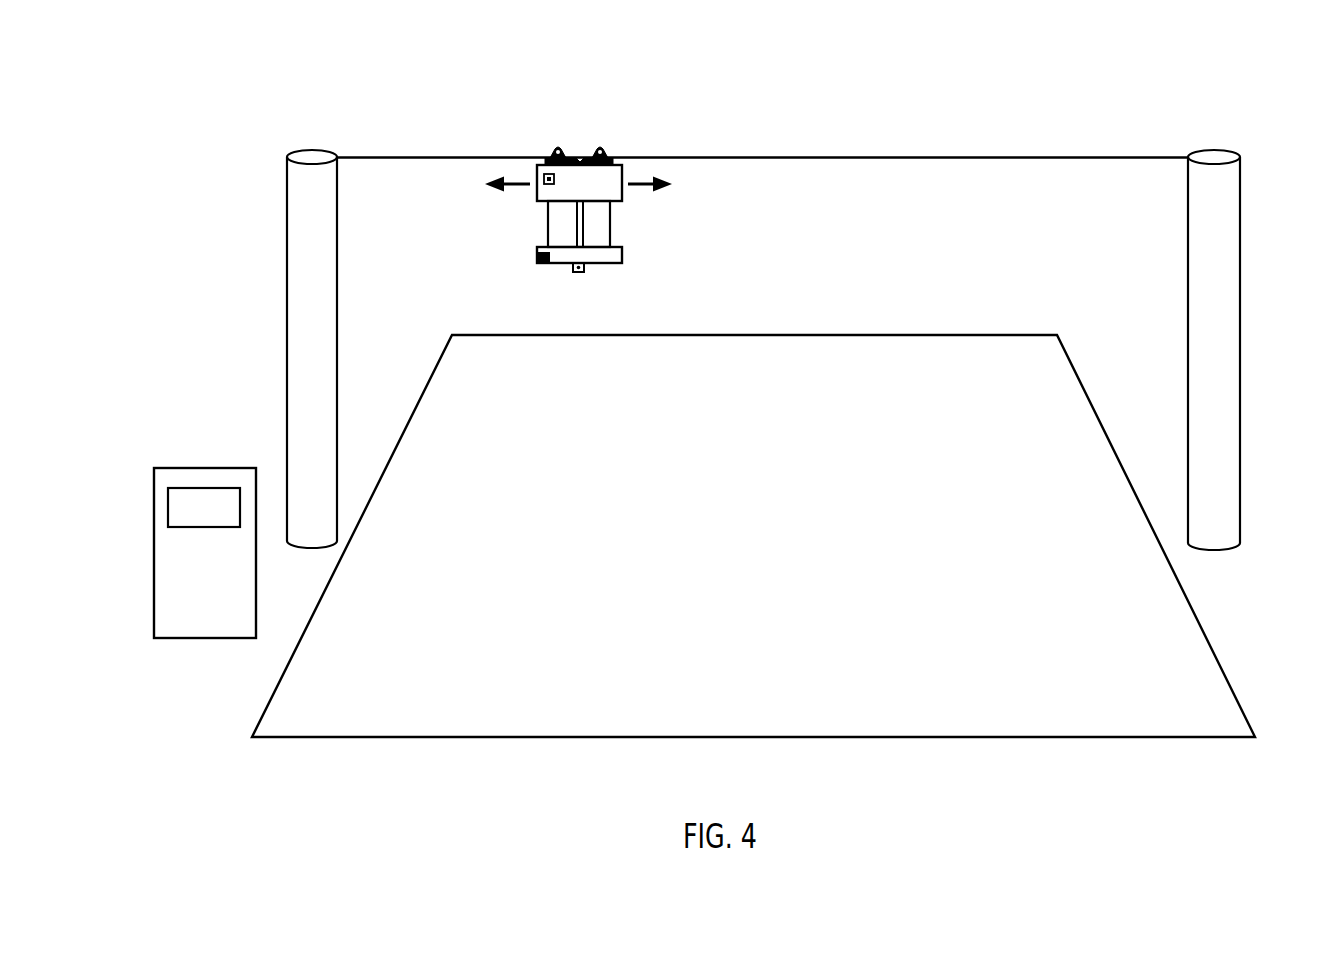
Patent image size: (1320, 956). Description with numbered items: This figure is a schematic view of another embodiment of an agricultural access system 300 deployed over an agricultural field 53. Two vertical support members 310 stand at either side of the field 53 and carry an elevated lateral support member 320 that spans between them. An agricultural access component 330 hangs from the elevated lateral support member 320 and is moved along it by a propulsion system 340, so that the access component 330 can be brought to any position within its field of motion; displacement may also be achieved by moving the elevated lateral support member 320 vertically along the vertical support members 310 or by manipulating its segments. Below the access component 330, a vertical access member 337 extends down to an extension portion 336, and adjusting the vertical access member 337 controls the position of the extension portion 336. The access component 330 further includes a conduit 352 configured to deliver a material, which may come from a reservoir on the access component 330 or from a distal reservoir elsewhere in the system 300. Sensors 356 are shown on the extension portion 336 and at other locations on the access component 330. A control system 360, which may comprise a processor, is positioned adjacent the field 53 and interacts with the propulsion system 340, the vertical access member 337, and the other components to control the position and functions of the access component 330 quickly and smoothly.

The agricultural access system 300 is at (348, 98).
The vertical support members 310 is at (300, 218).
The elevated lateral support member 320 is at (1073, 157).
The agricultural access component 330 is at (612, 186).
The propulsion system 340 is at (553, 137).
The vertical access member 337 is at (612, 207).
The conduit 352 is at (583, 233).
The extension portion 336 is at (622, 255).
The sensors 356 is at (545, 181).
The control system 360 is at (171, 482).
The agricultural field 53 is at (1208, 683).